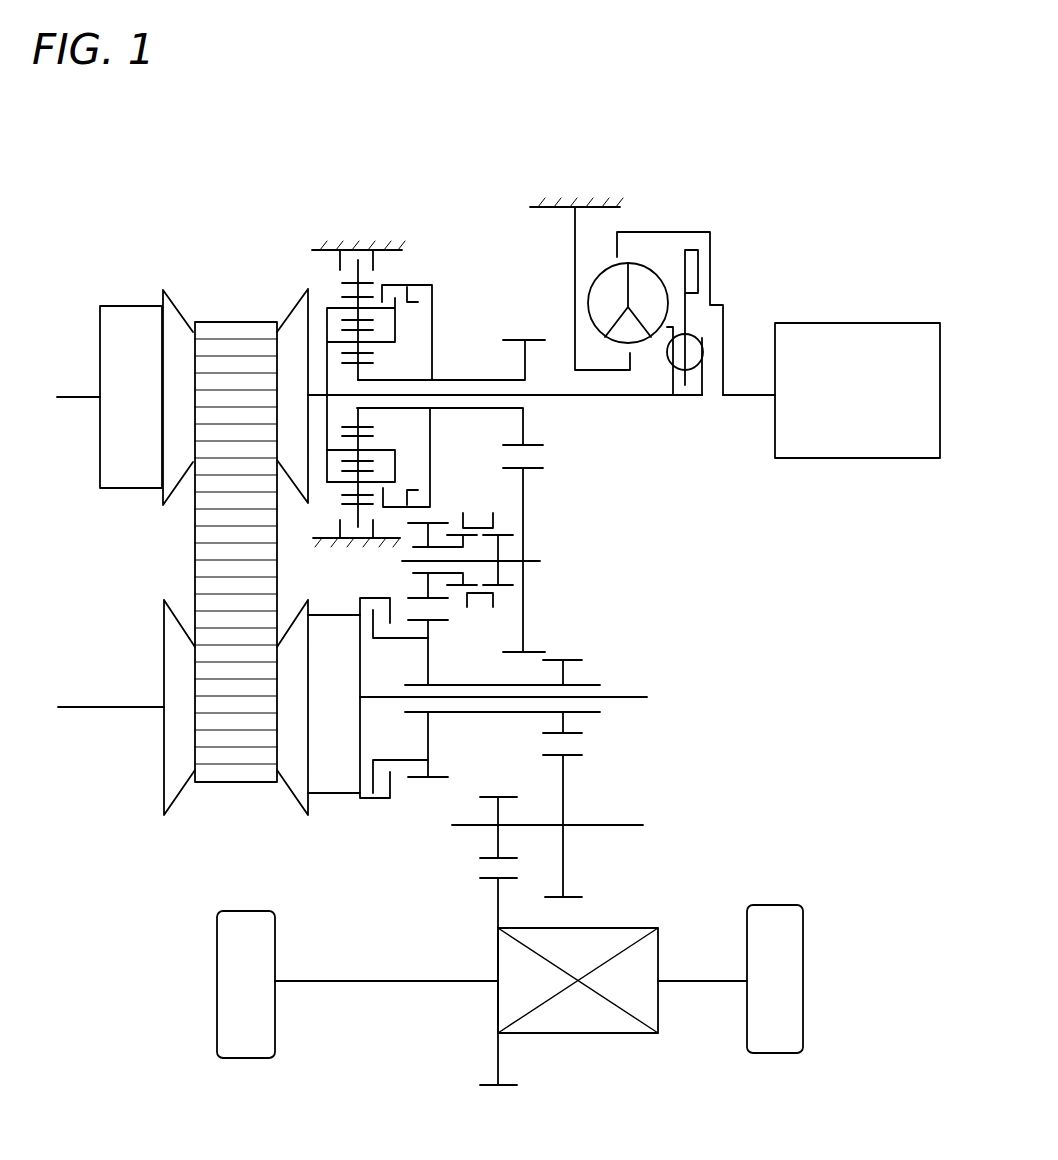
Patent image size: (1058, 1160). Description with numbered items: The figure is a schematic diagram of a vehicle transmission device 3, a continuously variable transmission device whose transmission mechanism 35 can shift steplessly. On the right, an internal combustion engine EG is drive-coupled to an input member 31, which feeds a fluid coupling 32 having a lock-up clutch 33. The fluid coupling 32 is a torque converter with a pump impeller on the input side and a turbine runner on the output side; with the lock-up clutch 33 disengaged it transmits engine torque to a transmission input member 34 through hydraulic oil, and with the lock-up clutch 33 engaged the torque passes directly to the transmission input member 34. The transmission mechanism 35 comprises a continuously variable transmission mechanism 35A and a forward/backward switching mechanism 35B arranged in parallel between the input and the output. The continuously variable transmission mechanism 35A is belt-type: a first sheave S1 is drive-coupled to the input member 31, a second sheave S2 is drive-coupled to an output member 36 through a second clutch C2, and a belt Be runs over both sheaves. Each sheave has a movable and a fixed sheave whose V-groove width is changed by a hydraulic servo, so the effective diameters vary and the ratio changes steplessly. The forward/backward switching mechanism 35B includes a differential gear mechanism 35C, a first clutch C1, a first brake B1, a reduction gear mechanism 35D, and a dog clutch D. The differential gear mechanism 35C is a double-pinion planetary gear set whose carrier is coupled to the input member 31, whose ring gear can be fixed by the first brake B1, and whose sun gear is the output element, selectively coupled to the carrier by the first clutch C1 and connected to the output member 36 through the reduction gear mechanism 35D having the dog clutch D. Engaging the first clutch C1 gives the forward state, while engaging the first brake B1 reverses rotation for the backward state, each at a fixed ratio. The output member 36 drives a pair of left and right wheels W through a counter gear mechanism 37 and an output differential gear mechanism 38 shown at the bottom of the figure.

The vehicle transmission device 3 is at (149, 183).
The transmission mechanism 35 is at (379, 508).
The continuously variable transmission mechanism 35A is at (172, 564).
The forward/backward switching mechanism 35B is at (437, 245).
The differential gear mechanism 35C is at (411, 346).
The reduction gear mechanism 35D is at (552, 545).
The first sheave S1 is at (178, 311).
The second sheave S2 is at (290, 788).
The belt Be is at (200, 530).
The first brake B1 is at (338, 262).
The first clutch C1 is at (418, 300).
The second clutch C2 is at (390, 792).
The dog clutch D is at (512, 609).
The output member 36 is at (567, 660).
The counter gear mechanism 37 is at (611, 853).
The output differential gear mechanism 38 is at (591, 1058).
The wheels W is at (247, 1060).
The input member 31 is at (745, 396).
The fluid coupling 32 is at (643, 227).
The lock-up clutch 33 is at (727, 272).
The transmission input member 34 is at (625, 396).
The internal combustion engine EG is at (858, 323).